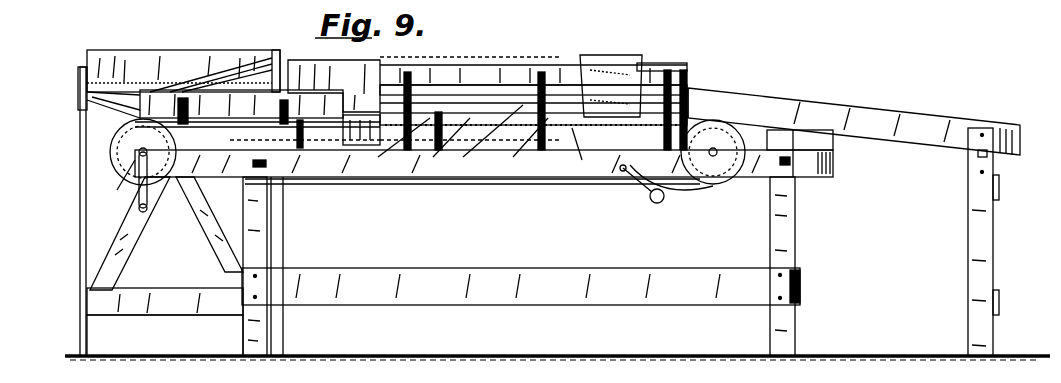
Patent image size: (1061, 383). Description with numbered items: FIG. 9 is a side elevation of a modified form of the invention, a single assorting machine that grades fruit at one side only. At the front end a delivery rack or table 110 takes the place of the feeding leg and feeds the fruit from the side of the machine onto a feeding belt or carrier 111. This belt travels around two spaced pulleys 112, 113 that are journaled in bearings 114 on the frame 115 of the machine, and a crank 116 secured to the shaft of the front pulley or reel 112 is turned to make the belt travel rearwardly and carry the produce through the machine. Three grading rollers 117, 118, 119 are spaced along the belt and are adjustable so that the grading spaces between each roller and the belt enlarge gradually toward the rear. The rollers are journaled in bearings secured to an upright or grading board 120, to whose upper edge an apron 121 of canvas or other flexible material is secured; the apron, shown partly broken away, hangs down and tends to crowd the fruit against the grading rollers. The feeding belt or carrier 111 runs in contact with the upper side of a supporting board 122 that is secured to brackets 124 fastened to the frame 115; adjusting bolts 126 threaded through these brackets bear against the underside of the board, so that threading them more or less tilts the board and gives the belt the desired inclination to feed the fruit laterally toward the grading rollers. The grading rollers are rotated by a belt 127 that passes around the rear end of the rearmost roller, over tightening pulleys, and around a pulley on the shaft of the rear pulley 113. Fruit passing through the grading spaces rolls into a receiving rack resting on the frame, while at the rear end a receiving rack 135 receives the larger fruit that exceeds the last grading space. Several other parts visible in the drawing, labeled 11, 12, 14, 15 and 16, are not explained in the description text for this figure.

The delivery rack or table 110 is at (175, 39).
The frame 11 is at (200, 70).
The shaker bed 12 is at (492, 212).
The apron cloth 14 is at (541, 150).
The delivery end 15 is at (713, 120).
The post 16 is at (795, 228).
The feeding belt or carrier 111 is at (485, 139).
The pulley or reel 112 is at (143, 152).
The pulley 113 is at (682, 161).
The bearings 114 is at (130, 175).
The frame 115 is at (770, 266).
The crank 116 is at (150, 203).
The grading roller 117 is at (396, 145).
The grading roller 118 is at (523, 145).
The grading roller 119 is at (581, 151).
The upright or grading board 120 is at (430, 80).
The apron 121 is at (334, 86).
The supporting board 122 is at (437, 145).
The brackets 124 is at (572, 198).
The adjusting bolts 126 is at (318, 135).
The belt 127 is at (682, 107).
The receiving rack 135 is at (858, 110).